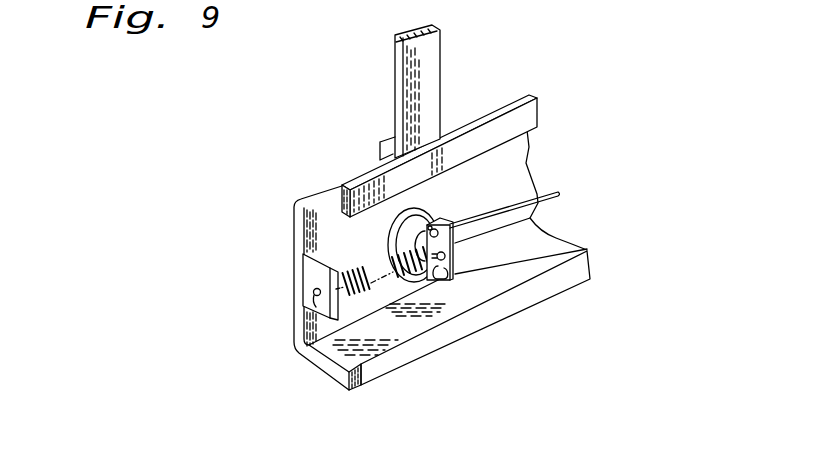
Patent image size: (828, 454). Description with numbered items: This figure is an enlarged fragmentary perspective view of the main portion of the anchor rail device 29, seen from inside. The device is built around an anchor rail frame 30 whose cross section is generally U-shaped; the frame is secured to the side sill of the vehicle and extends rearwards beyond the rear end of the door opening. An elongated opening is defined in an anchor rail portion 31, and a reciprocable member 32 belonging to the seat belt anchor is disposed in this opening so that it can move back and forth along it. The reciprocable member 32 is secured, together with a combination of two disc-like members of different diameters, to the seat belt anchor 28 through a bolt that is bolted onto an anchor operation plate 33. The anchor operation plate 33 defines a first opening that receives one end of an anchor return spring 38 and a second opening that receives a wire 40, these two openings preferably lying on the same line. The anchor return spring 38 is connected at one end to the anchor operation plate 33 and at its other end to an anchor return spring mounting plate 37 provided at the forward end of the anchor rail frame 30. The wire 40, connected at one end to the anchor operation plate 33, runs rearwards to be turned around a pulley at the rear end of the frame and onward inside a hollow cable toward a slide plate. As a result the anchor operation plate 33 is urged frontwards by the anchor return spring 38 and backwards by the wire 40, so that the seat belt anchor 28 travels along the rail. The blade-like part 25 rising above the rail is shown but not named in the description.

The blade 25 is at (395, 88).
The seat belt anchor 28 is at (380, 147).
The anchor rail device 29 is at (410, 374).
The anchor rail frame 30 is at (437, 343).
The anchor rail portion 31 is at (502, 228).
The reciprocable member 32 is at (390, 225).
The anchor operation plate 33 is at (458, 281).
The anchor return spring mounting plate 37 is at (306, 284).
The anchor return spring 38 is at (392, 266).
The wire 40 is at (558, 197).